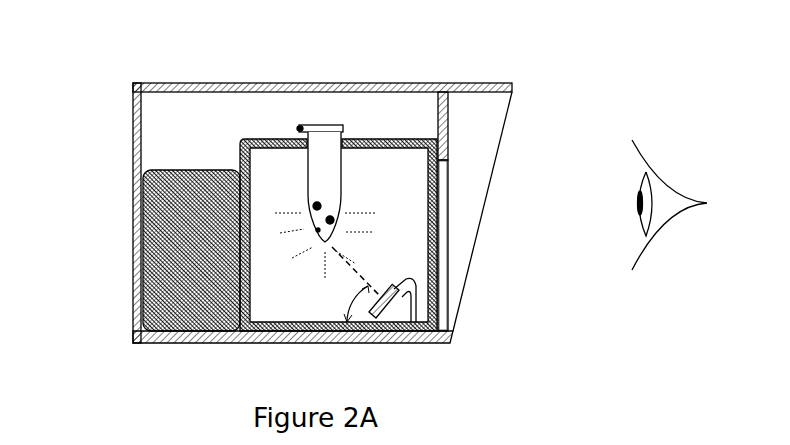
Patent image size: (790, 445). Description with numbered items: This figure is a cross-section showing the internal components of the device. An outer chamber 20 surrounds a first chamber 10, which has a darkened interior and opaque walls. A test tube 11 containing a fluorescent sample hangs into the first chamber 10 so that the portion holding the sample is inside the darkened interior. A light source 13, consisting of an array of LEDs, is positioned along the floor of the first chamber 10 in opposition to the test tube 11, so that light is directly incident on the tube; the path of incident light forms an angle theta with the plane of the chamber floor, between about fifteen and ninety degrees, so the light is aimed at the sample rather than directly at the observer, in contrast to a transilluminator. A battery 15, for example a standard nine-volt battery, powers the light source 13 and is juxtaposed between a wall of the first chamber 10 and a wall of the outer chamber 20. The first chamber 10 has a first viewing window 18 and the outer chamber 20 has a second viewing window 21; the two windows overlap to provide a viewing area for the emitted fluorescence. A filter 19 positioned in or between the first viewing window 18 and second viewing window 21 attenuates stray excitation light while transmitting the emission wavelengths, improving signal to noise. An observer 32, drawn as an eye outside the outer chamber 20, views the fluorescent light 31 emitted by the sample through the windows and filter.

The first chamber 10 is at (250, 343).
The test tube 11 is at (323, 158).
The light source 13 is at (385, 343).
The battery 15 is at (183, 297).
The first viewing window 18 is at (428, 142).
The filter 19 is at (438, 169).
The outer chamber 20 is at (133, 137).
The second viewing window 21 is at (443, 209).
The emitted light path 31 is at (338, 234).
The observer 32 is at (658, 172).